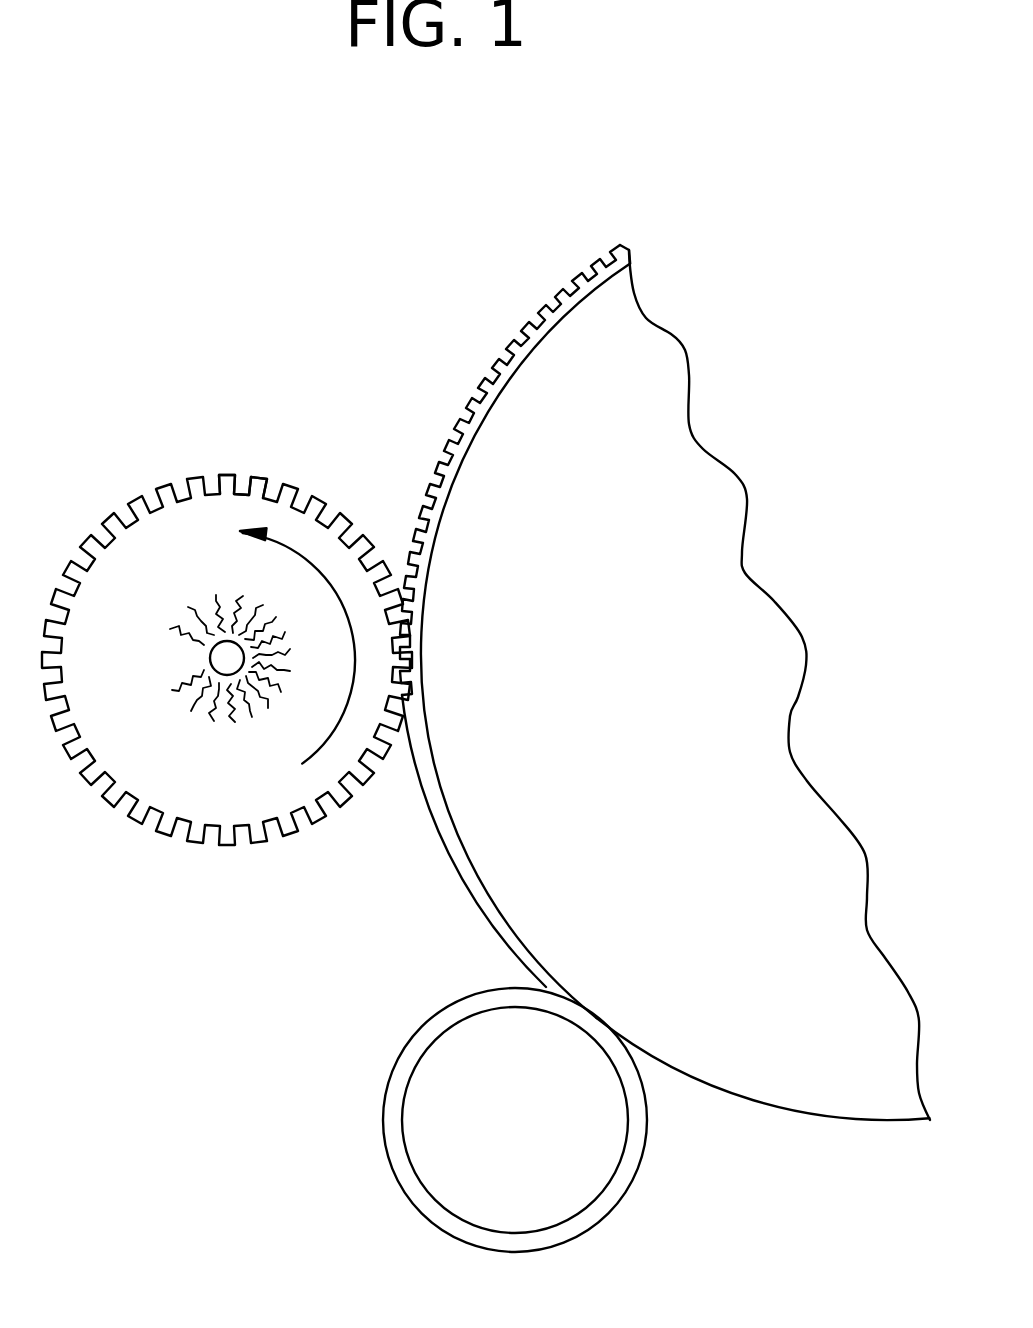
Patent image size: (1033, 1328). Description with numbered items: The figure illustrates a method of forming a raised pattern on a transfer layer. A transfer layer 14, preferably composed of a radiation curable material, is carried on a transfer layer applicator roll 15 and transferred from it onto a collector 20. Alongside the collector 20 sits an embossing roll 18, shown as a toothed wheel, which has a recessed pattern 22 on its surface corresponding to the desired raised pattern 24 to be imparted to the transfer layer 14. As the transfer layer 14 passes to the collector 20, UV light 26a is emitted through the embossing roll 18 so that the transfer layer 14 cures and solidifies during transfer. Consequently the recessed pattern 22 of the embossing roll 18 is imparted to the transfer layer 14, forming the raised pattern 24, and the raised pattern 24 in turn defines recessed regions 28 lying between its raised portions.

The transfer layer 14 is at (478, 892).
The transfer layer applicator roll 15 is at (536, 1127).
The embossing roll 18 is at (104, 649).
The collector 20 is at (616, 689).
The recessed pattern 22 is at (210, 480).
The raised pattern 24 is at (475, 395).
The UV light 26a is at (222, 660).
The recessed regions 28 is at (457, 433).